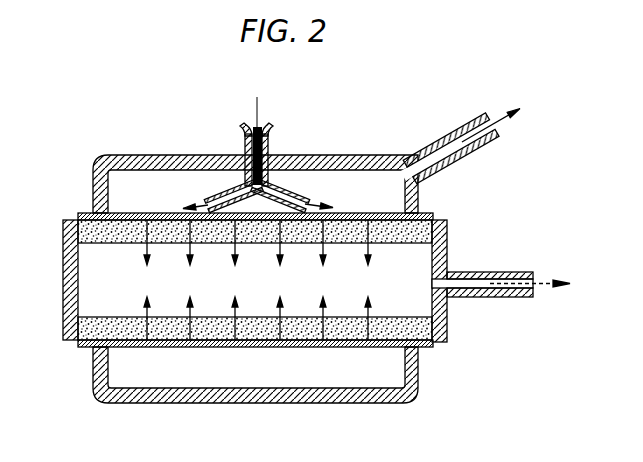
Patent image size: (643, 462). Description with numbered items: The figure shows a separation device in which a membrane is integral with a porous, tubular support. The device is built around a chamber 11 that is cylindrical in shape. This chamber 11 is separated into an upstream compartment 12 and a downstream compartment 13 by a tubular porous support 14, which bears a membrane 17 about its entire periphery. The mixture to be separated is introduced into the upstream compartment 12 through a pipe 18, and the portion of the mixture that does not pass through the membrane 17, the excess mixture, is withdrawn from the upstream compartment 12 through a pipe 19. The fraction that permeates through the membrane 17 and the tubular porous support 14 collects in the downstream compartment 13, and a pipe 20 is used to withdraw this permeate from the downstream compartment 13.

The chamber 11 is at (86, 405).
The upstream compartment 12 is at (115, 193).
The downstream compartment 13 is at (90, 284).
The tubular porous support 14 is at (138, 214).
The membrane 17 is at (212, 348).
The pipe 18 is at (258, 133).
The pipe 19 is at (462, 126).
The pipe 20 is at (522, 283).